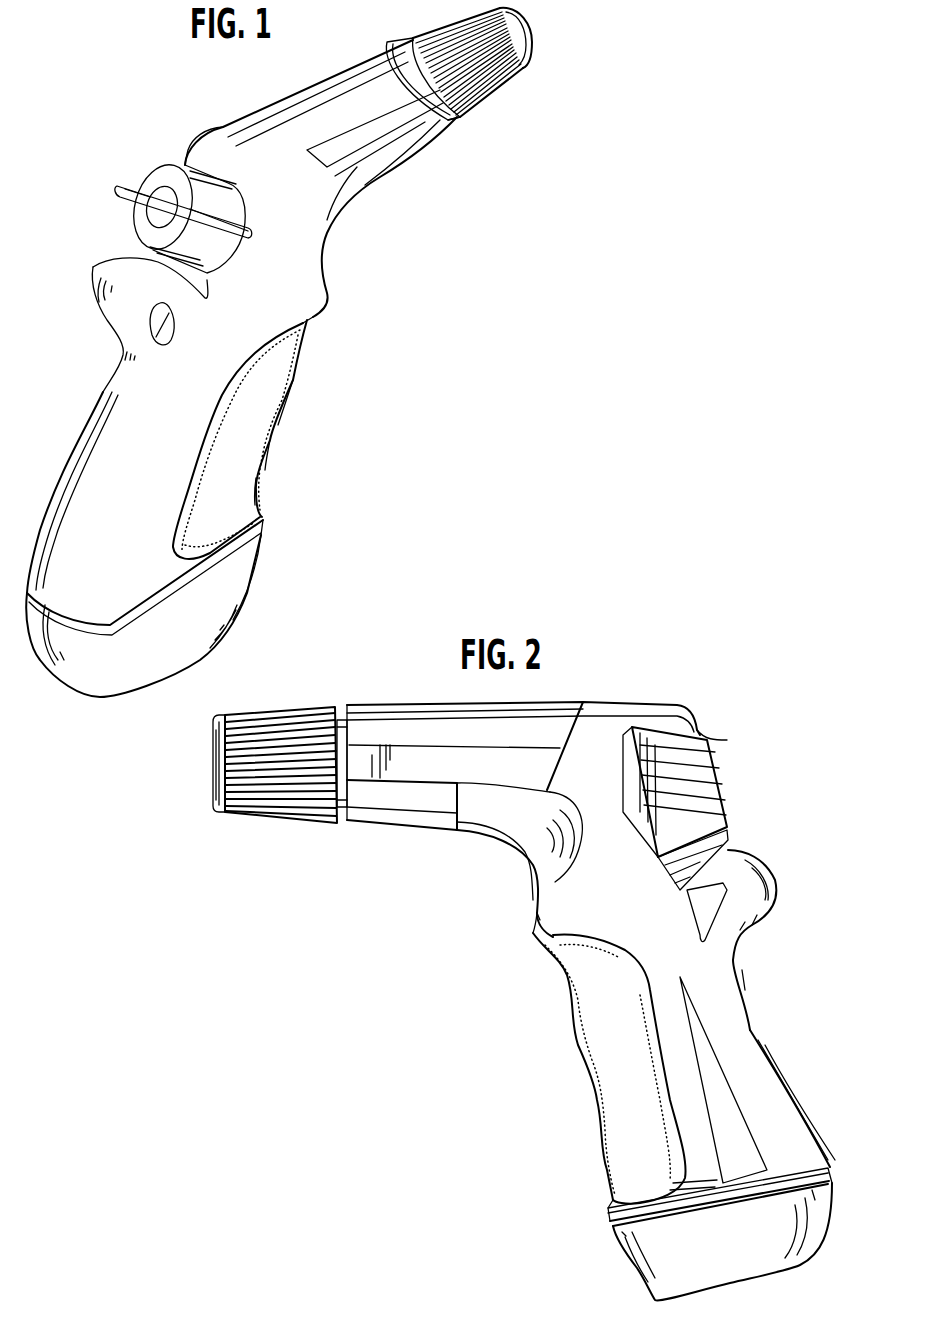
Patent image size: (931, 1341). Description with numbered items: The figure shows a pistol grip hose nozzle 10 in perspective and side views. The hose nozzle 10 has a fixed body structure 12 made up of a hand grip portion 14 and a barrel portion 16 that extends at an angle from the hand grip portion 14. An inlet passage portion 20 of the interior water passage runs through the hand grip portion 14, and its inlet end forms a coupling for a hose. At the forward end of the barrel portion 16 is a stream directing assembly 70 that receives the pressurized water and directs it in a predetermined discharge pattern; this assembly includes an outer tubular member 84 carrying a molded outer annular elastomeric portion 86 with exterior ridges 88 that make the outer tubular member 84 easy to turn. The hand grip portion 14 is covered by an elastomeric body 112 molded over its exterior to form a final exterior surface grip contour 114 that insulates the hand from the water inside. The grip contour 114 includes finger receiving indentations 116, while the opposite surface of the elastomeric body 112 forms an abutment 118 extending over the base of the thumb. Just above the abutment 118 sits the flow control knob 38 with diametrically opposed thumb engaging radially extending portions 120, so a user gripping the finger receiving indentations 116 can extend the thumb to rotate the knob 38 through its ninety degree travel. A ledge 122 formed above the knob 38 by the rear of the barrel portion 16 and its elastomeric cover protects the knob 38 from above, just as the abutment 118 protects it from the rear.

In FIG. 1, the pistol grip hose nozzle 10 is at (95, 143).
In FIG. 2, the pistol grip hose nozzle 10 is at (616, 695).
In FIG. 1, the fixed body structure 12 is at (322, 312).
In FIG. 2, the fixed body structure 12 is at (512, 843).
In FIG. 1, the hand grip portion 14 is at (95, 460).
In FIG. 2, the hand grip portion 14 is at (640, 1150).
In FIG. 1, the barrel portion 16 is at (300, 118).
In FIG. 2, the barrel portion 16 is at (397, 707).
In FIG. 1, the inlet passage portion 20 is at (83, 690).
In FIG. 2, the inlet passage portion 20 is at (655, 1300).
In FIG. 1, the flow control knob 38 is at (160, 178).
In FIG. 2, the flow control knob 38 is at (702, 762).
In FIG. 1, the stream directing assembly 70 is at (424, 15).
In FIG. 2, the stream directing assembly 70 is at (262, 822).
In FIG. 1, the outer tubular member 84 is at (528, 62).
In FIG. 2, the outer tubular member 84 is at (222, 716).
In FIG. 1, the outer annular elastomeric portion 86 is at (497, 90).
In FIG. 2, the outer annular elastomeric portion 86 is at (294, 722).
In FIG. 1, the exterior ridges 88 is at (455, 120).
In FIG. 2, the exterior ridges 88 is at (307, 815).
In FIG. 1, the elastomeric body 112 is at (240, 492).
In FIG. 2, the elastomeric body 112 is at (610, 1190).
In FIG. 1, the exterior surface grip contour 114 is at (275, 425).
In FIG. 2, the exterior surface grip contour 114 is at (568, 1020).
In FIG. 1, the finger receiving indentations 116 is at (300, 345).
In FIG. 2, the finger receiving indentations 116 is at (588, 1090).
In FIG. 1, the abutment 118 is at (108, 266).
In FIG. 2, the abutment 118 is at (781, 905).
In FIG. 1, the thumb engaging radially extending portions 120 is at (120, 205).
In FIG. 2, the thumb engaging radially extending portions 120 is at (728, 812).
In FIG. 1, the ledge 122 is at (195, 160).
In FIG. 2, the ledge 122 is at (685, 710).